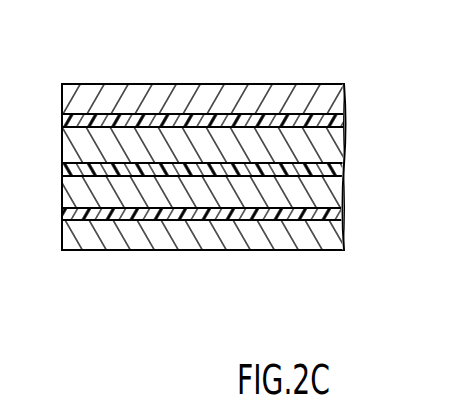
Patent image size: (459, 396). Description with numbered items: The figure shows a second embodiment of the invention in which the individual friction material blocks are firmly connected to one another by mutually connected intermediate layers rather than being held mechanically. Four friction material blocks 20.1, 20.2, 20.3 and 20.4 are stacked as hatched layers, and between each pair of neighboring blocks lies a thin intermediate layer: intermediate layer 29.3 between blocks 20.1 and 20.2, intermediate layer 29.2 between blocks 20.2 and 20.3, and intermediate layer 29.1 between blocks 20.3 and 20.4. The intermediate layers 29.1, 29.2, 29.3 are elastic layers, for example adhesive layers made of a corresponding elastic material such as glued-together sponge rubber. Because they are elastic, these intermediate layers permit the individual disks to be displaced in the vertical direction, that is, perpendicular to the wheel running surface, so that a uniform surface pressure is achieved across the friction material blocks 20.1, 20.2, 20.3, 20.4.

The friction material block 20.1 is at (163, 100).
The friction material block 20.2 is at (235, 137).
The friction material block 20.3 is at (255, 190).
The friction material block 20.4 is at (323, 233).
The intermediate layer 29.1 is at (203, 212).
The intermediate layer 29.2 is at (100, 170).
The intermediate layer 29.3 is at (104, 123).